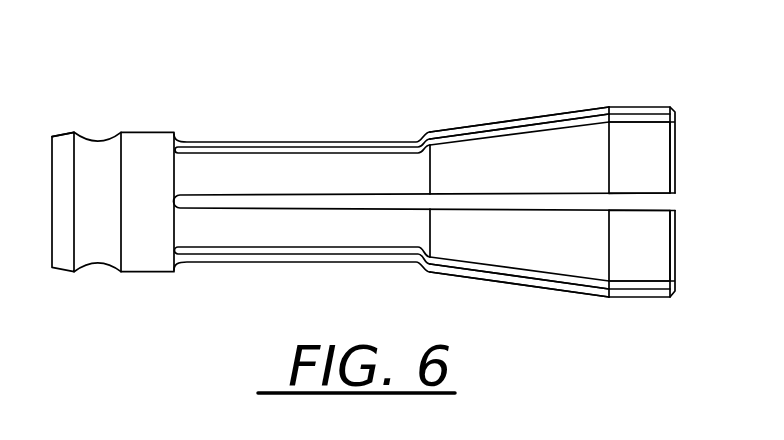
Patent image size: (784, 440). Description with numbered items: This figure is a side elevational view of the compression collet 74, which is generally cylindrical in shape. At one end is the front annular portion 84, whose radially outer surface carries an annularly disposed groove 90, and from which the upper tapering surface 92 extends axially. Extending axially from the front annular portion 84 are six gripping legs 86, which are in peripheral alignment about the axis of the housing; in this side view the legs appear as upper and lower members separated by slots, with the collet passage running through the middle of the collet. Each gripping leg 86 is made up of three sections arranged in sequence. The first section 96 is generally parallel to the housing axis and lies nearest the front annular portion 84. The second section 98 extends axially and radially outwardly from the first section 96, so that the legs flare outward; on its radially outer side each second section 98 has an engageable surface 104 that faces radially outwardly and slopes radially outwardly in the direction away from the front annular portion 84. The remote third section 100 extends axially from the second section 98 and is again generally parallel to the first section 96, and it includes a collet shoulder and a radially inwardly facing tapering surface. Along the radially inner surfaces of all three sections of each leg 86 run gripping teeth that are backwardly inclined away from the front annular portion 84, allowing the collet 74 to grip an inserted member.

The compression collet 74 is at (282, 102).
The front annular portion 84 is at (110, 287).
The gripping legs 86 is at (650, 157).
The groove 90 is at (100, 140).
The upper tapering surface 92 is at (65, 133).
The first section 96 is at (250, 265).
The second section 98 is at (472, 122).
The third section 100 is at (640, 105).
The engageable surface 104 is at (508, 118).